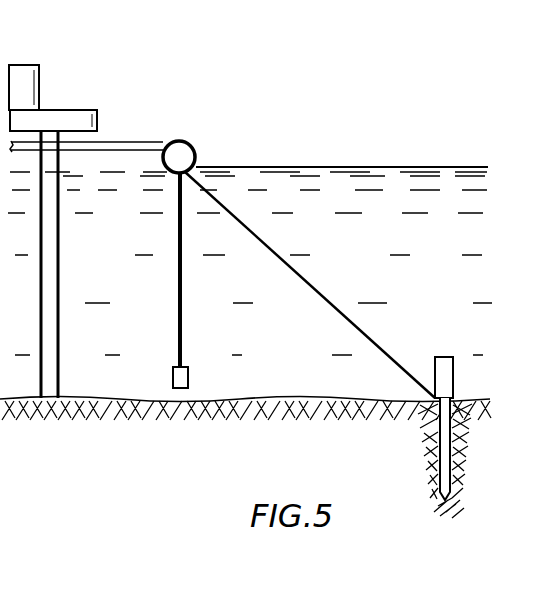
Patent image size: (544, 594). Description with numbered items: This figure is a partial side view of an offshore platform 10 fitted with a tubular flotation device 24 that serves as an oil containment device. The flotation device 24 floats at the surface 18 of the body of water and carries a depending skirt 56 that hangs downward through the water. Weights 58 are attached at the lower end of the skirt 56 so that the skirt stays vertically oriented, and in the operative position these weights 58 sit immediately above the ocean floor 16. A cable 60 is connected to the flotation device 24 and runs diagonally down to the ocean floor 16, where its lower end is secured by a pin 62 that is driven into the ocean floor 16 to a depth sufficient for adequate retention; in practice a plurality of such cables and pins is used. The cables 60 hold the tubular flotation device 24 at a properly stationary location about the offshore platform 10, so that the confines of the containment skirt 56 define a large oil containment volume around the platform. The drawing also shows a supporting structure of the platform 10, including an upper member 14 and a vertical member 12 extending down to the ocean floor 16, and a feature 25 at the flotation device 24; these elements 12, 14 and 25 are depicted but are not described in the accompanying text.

The offshore platform 10 is at (30, 65).
The cross beam 14 is at (88, 110).
The post 12 is at (62, 261).
The surface of the body of water 18 is at (366, 167).
The tubular flotation device 24 is at (197, 152).
The pulley axle 25 is at (180, 152).
The depending skirt 56 is at (183, 300).
The weights 58 is at (173, 378).
The cables 60 is at (300, 280).
The pins 62 is at (445, 367).
The ocean floor 16 is at (281, 398).